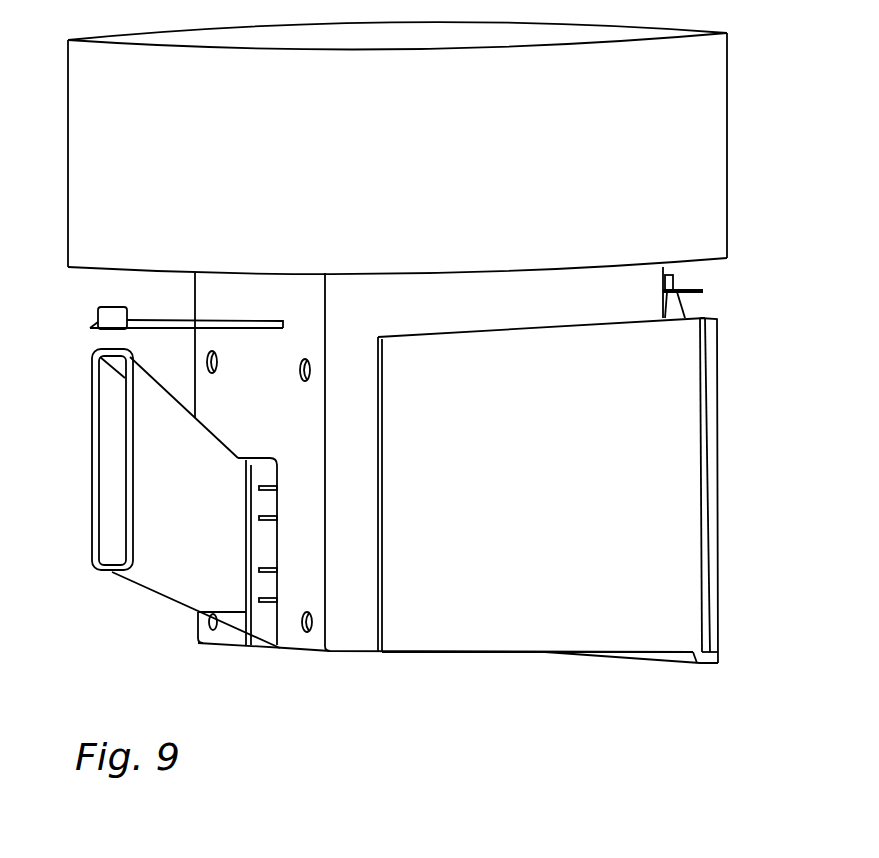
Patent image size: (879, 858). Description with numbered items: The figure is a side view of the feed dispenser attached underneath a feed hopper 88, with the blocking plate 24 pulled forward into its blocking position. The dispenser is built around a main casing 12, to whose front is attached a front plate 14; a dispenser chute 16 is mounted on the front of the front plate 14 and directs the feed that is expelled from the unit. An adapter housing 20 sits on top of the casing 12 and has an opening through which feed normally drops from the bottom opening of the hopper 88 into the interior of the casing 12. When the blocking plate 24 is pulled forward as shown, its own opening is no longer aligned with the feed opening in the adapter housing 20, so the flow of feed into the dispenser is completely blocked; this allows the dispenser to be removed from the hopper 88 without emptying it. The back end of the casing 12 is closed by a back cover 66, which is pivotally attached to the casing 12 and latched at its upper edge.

The feed hopper 88 is at (727, 97).
The adapter housing 20 is at (650, 286).
The blocking plate 24 is at (97, 318).
The dispenser chute 16 is at (109, 572).
The front plate 14 is at (308, 633).
The main casing 12 is at (505, 635).
The back cover 66 is at (718, 478).